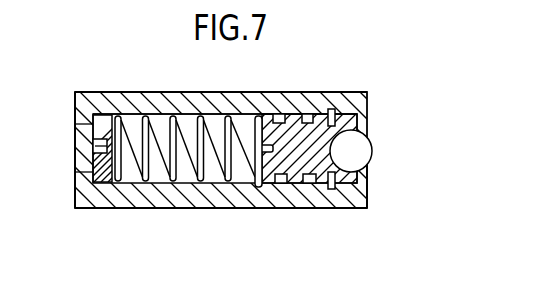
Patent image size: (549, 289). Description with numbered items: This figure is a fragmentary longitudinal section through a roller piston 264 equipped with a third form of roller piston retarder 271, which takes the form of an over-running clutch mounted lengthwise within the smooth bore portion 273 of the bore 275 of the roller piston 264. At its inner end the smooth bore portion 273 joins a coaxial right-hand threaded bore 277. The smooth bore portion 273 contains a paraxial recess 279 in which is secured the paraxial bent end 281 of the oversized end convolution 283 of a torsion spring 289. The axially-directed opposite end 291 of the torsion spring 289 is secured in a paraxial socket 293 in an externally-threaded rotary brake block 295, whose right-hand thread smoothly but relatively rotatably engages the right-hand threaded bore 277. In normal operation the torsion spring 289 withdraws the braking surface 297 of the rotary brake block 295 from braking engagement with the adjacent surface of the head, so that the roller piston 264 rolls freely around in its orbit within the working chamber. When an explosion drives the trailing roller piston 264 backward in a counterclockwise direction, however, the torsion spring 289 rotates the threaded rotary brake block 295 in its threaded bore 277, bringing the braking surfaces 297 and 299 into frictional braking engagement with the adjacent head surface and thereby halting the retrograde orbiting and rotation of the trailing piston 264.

The roller piston 264 is at (369, 91).
The roller piston retarder 271 is at (114, 48).
The smooth bore portion 273 is at (117, 112).
The bore 275 is at (244, 118).
The right-hand threaded bore 277 is at (314, 120).
The paraxial recess 279 is at (97, 139).
The paraxial bent end 281 is at (107, 155).
The oversized end convolution 283 is at (113, 183).
The torsion spring 289 is at (185, 157).
The axially-directed opposite end 291 is at (296, 114).
The paraxial socket 293 is at (265, 175).
The rotary brake block 295 is at (360, 122).
The braking surface 297 is at (359, 190).
The braking surface 299 is at (77, 106).